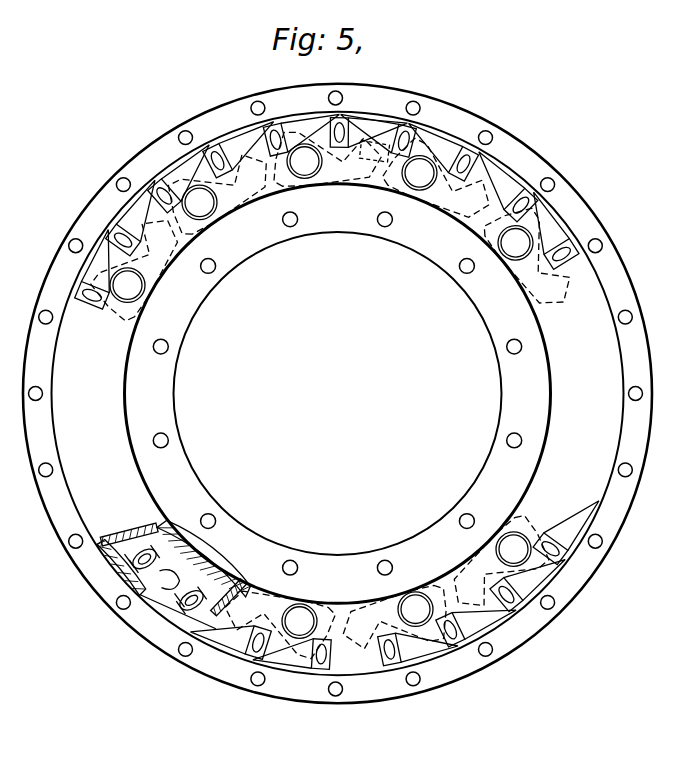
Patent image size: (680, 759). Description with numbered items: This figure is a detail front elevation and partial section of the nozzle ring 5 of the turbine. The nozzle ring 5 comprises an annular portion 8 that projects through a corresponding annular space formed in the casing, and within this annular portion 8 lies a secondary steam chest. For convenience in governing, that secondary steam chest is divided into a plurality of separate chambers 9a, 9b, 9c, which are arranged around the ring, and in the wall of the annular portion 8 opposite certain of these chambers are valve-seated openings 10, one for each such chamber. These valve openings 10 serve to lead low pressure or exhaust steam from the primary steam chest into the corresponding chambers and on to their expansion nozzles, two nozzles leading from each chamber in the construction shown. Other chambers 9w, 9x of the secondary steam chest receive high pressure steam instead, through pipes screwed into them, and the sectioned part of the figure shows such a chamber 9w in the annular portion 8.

The nozzle ring 5 is at (517, 170).
The annular portion 8 is at (585, 277).
The chamber 9a is at (243, 190).
The chamber 9b is at (363, 175).
The chamber 9c is at (467, 220).
The chamber 9w is at (173, 560).
The chamber 9x is at (260, 613).
The valve-seated opening 10 is at (419, 190).